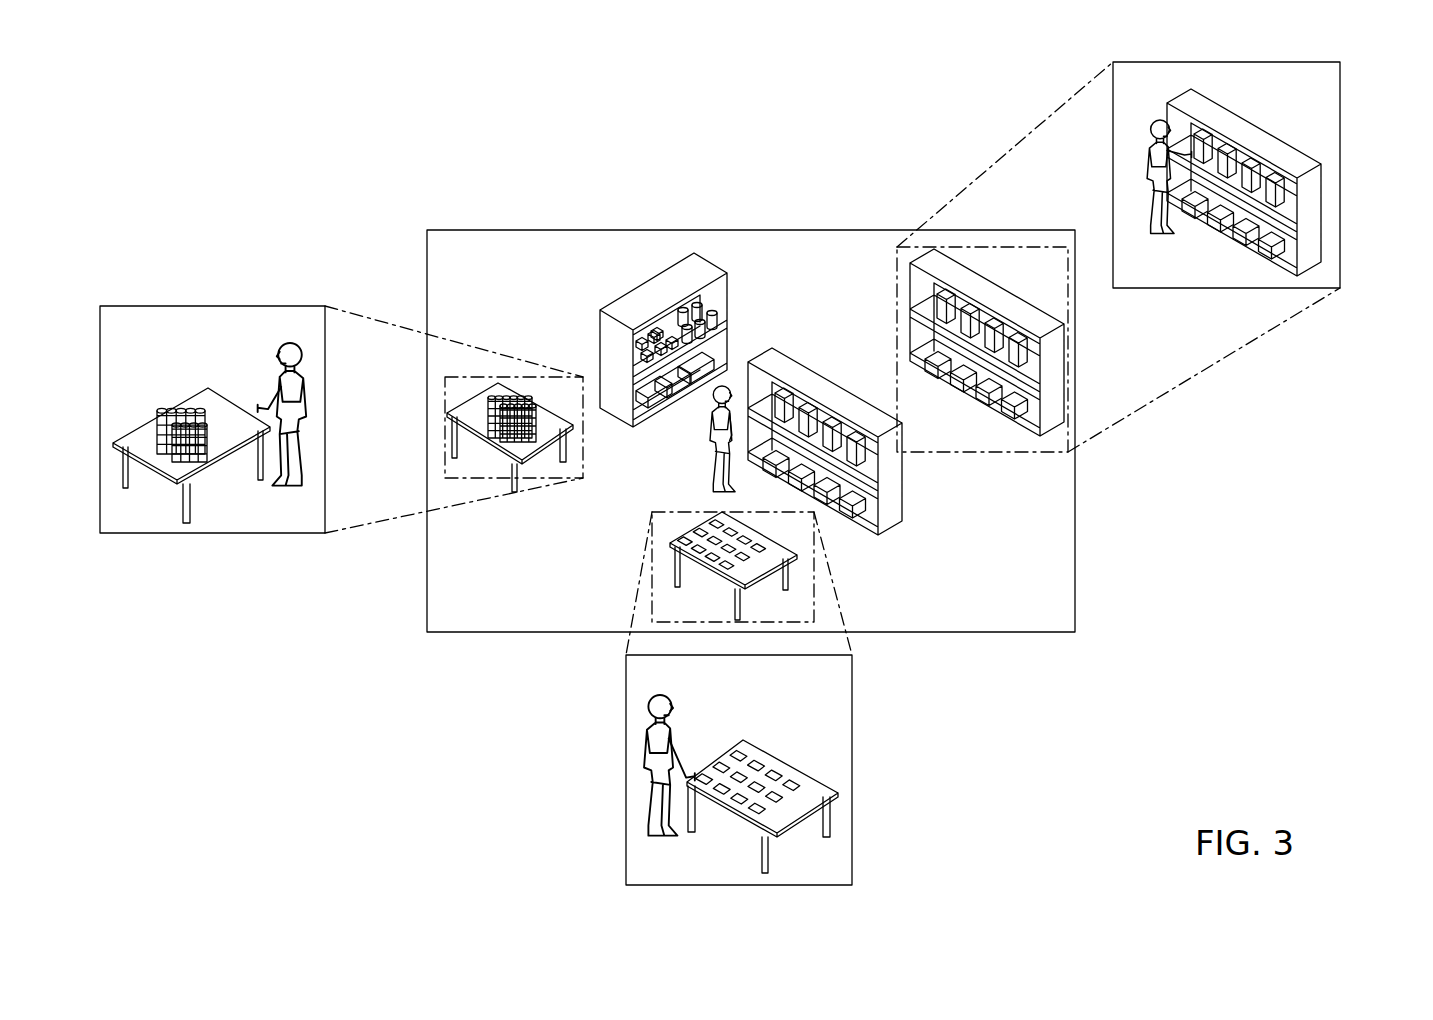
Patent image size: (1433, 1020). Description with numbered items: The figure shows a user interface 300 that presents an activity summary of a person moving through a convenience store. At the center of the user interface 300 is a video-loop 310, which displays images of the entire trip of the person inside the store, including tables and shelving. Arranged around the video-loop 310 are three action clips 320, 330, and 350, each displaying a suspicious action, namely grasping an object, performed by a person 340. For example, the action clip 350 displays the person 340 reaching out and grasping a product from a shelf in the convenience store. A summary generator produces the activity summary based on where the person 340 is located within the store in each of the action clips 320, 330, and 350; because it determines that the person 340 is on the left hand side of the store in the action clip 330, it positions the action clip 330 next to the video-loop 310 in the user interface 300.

The user interface 300 is at (1206, 744).
The video-loop 310 is at (512, 217).
The action clip 320 is at (853, 723).
The action clip 330 is at (327, 485).
The person 340 is at (1157, 152).
The action clip 350 is at (1341, 120).